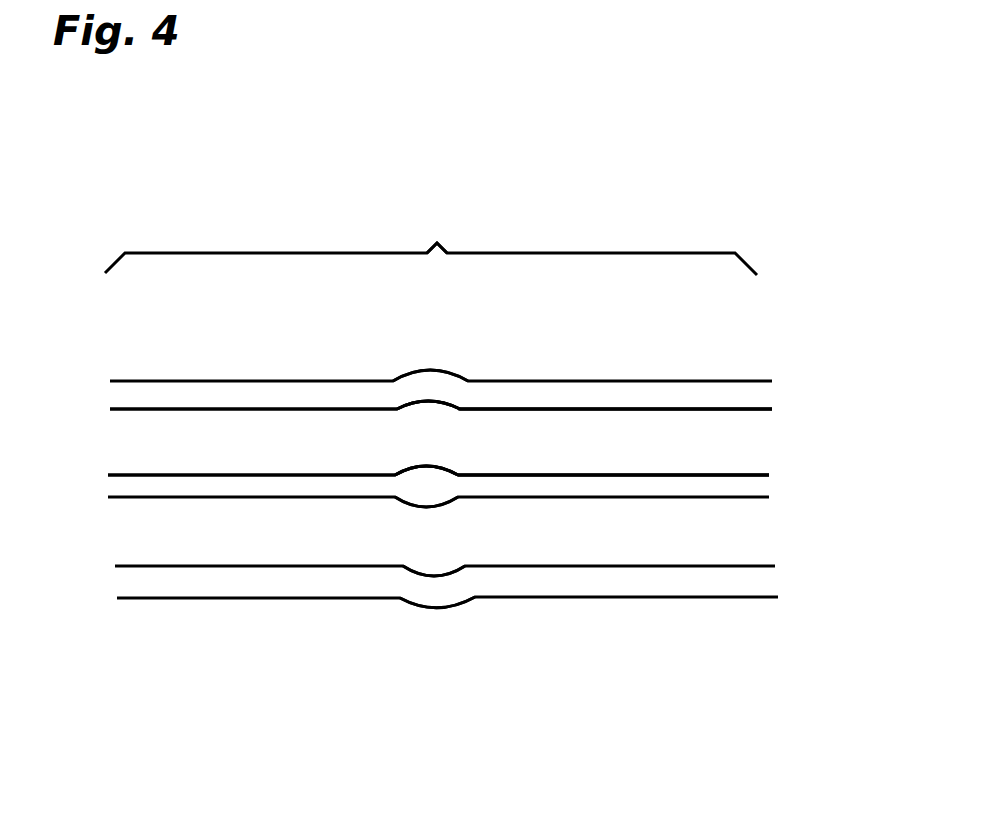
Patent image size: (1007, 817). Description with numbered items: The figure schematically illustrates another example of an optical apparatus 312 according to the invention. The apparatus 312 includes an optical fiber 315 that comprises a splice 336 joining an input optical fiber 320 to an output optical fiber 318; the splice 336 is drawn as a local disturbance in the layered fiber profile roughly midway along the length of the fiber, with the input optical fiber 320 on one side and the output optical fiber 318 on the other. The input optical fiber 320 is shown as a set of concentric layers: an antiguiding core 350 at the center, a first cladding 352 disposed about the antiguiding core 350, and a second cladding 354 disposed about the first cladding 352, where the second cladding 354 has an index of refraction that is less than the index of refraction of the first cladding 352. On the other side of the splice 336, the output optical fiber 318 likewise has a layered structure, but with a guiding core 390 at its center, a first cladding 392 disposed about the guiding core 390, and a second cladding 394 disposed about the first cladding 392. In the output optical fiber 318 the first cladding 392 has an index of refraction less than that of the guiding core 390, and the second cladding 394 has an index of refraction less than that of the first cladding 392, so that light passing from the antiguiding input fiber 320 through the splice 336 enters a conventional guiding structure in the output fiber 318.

The optical apparatus 312 is at (167, 205).
The optical fiber 315 is at (444, 229).
The output optical fiber 318 is at (649, 640).
The input optical fiber 320 is at (205, 635).
The splice 336 is at (462, 345).
The antiguiding core 350 is at (142, 486).
The first cladding 352 is at (237, 454).
The second cladding 354 is at (167, 393).
The guiding core 390 is at (745, 483).
The first cladding 392 is at (660, 455).
The second cladding 394 is at (728, 392).